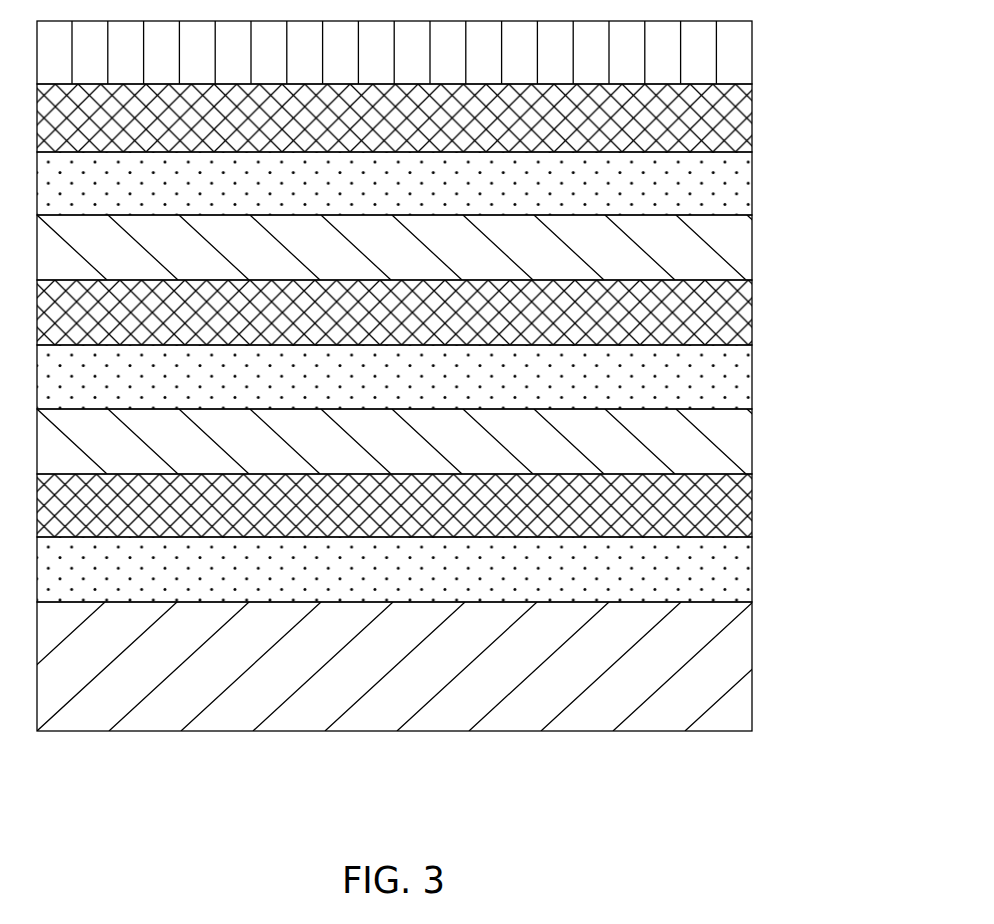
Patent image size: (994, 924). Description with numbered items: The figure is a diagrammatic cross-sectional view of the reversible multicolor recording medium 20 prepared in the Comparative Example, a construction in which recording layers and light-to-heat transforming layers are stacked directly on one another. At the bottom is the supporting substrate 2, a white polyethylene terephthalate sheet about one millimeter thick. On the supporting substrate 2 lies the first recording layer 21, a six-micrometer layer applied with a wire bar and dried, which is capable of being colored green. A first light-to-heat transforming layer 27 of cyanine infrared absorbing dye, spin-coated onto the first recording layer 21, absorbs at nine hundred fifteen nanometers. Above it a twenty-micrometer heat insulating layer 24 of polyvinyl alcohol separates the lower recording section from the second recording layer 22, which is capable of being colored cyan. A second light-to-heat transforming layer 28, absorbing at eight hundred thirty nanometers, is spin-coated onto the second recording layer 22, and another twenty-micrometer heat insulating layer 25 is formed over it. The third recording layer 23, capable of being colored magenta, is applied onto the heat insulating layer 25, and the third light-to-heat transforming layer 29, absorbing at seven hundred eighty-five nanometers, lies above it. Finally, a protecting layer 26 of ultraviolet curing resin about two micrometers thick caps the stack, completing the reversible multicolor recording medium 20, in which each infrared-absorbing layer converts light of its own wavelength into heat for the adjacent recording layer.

The supporting substrate 2 is at (738, 643).
The reversible multicolor recording medium 20 is at (872, 779).
The first recording layer 21 is at (738, 576).
The second recording layer 22 is at (738, 385).
The third recording layer 23 is at (738, 188).
The heat insulating layer 24 is at (738, 450).
The heat insulating layer 25 is at (738, 253).
The protecting layer 26 is at (738, 60).
The first light-to-heat transforming layer 27 is at (738, 513).
The second light-to-heat transforming layer 28 is at (738, 318).
The third light-to-heat transforming layer 29 is at (738, 125).